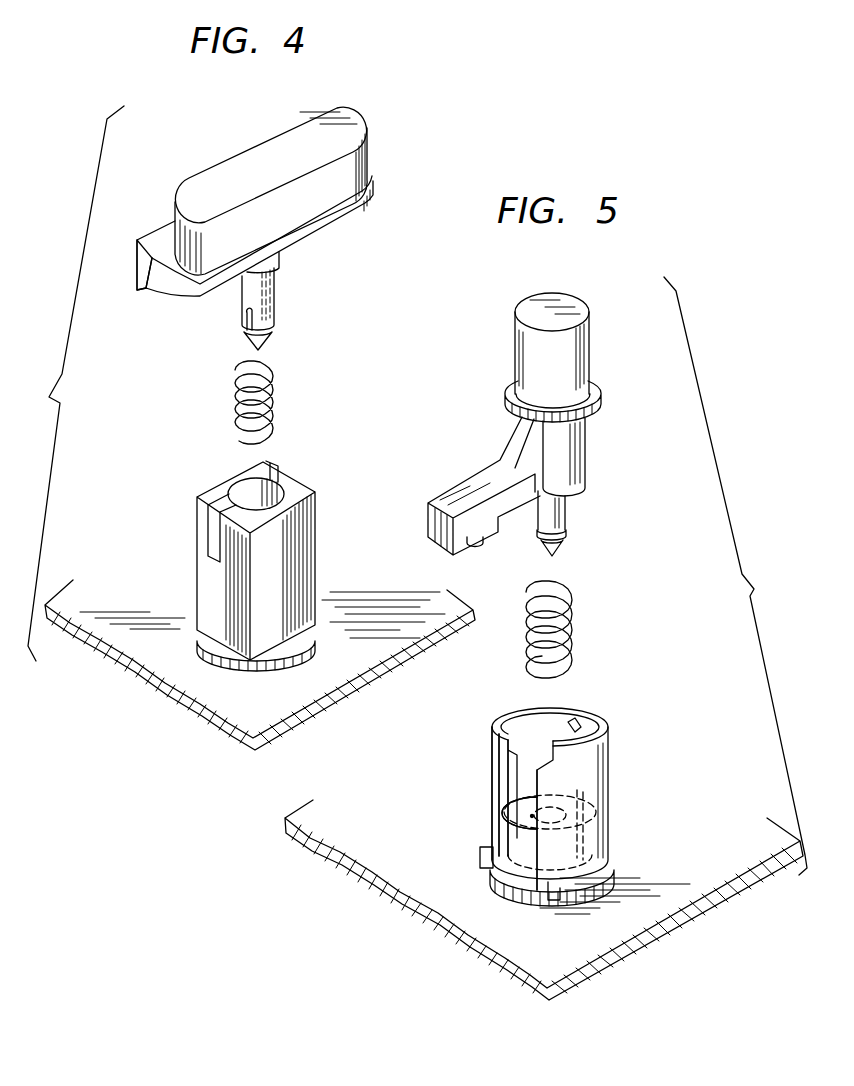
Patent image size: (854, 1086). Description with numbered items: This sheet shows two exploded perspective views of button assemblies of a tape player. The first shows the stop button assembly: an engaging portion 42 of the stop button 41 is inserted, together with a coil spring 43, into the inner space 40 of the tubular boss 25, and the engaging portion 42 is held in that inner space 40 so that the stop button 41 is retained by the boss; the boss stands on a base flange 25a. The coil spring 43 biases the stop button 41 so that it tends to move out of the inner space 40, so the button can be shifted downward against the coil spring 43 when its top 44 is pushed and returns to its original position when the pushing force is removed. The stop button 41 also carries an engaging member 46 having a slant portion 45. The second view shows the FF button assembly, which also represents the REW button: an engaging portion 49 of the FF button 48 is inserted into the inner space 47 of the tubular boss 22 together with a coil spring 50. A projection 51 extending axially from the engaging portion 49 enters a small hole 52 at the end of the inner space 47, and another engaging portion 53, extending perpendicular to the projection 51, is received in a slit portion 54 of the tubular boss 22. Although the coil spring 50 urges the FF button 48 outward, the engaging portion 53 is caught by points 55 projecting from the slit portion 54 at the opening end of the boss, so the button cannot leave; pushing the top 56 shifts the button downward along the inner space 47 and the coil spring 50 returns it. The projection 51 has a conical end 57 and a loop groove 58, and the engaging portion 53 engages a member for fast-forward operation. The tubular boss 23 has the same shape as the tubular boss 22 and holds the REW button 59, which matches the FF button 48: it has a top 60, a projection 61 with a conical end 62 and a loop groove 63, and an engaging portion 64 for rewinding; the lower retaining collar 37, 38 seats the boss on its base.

In FIG. 4, the stop button 41 is at (375, 167).
In FIG. 4, the top 44 is at (252, 160).
In FIG. 4, the engaging member 46 is at (142, 265).
In FIG. 4, the slant portion 45 is at (152, 277).
In FIG. 4, the engaging portion 42 is at (276, 308).
In FIG. 4, the coil spring 43 is at (277, 398).
In FIG. 4, the tubular boss 25 is at (213, 585).
In FIG. 4, the inner space 40 is at (230, 478).
In FIG. 4, the socket base flange 25a is at (292, 645).
In FIG. 5, the top 56 is at (535, 307).
In FIG. 5, the top 60 is at (531, 333).
In FIG. 5, the FF button 48 is at (598, 373).
In FIG. 5, the REW button 59 is at (597, 389).
In FIG. 5, the engaging portion 49 is at (578, 447).
In FIG. 5, the engaging portion 53 is at (498, 460).
In FIG. 5, the engaging portion 64 is at (484, 486).
In FIG. 5, the projection 51 is at (557, 505).
In FIG. 5, the projection 61 is at (610, 507).
In FIG. 5, the loop groove 58 is at (563, 531).
In FIG. 5, the loop groove 63 is at (609, 528).
In FIG. 5, the conical end 57 is at (558, 550).
In FIG. 5, the conical end 62 is at (611, 552).
In FIG. 5, the coil spring 50 is at (573, 622).
In FIG. 5, the inner space 47 is at (578, 730).
In FIG. 5, the tubular boss 22 is at (600, 786).
In FIG. 5, the tubular boss 23 is at (596, 799).
In FIG. 5, the points 55 is at (508, 783).
In FIG. 5, the slit portion 54 is at (512, 792).
In FIG. 5, the small hole 52 is at (530, 818).
In FIG. 5, the bottom flange 37 is at (510, 885).
In FIG. 5, the bottom flange (alternate) 38 is at (515, 876).